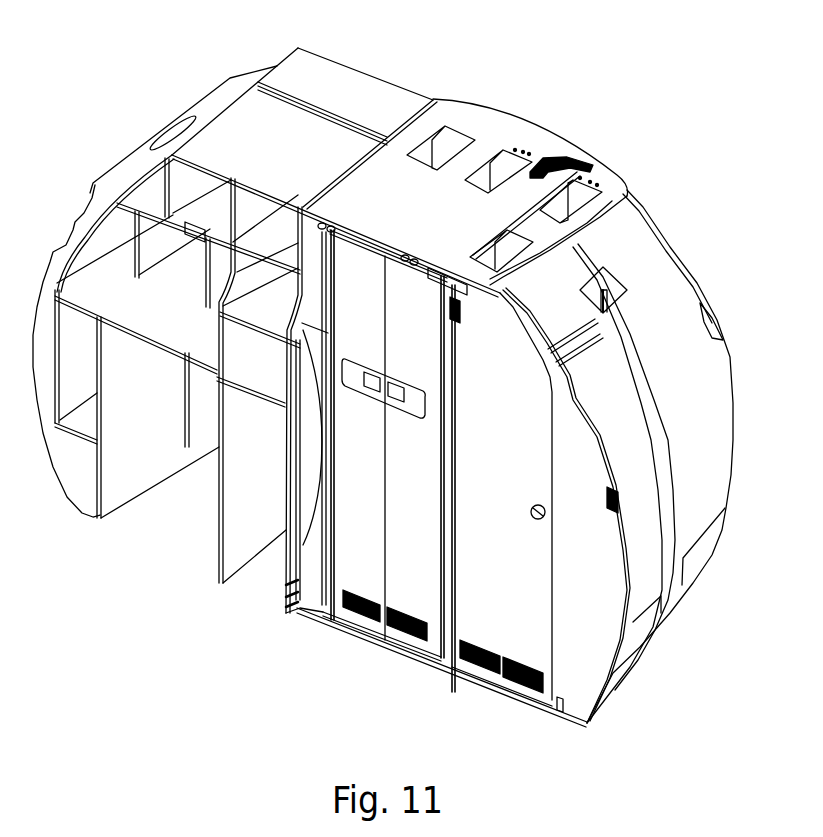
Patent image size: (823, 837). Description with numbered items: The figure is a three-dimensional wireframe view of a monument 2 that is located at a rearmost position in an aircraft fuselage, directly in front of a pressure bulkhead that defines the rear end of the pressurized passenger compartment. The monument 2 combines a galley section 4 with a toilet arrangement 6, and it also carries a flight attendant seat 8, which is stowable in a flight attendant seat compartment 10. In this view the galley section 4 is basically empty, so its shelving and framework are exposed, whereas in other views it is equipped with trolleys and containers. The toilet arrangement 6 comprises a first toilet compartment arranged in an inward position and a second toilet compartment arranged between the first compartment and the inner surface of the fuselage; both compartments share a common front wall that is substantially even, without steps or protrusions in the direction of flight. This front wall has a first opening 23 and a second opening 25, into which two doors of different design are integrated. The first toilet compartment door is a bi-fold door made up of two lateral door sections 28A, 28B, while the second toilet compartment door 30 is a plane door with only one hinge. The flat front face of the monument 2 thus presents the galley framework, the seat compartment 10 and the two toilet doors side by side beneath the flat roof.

The monument 2 is at (518, 77).
The galley section 4 is at (437, 92).
The toilet arrangement 6 is at (725, 218).
The flight attendant seat 8 is at (310, 600).
The flight attendant seat compartment 10 is at (293, 616).
The first opening 23 is at (377, 654).
The second opening 25 is at (491, 700).
The lateral door section 28A is at (377, 485).
The lateral door section 28B is at (432, 485).
The second toilet compartment door 30 is at (512, 562).